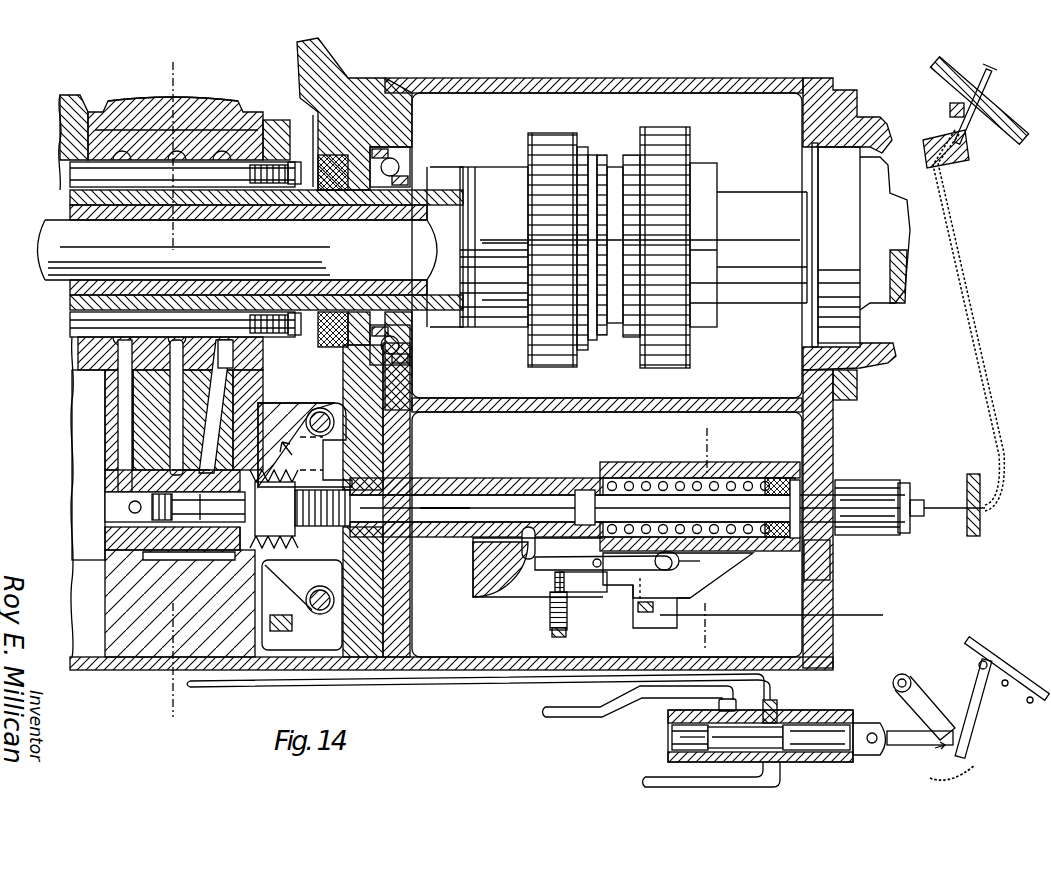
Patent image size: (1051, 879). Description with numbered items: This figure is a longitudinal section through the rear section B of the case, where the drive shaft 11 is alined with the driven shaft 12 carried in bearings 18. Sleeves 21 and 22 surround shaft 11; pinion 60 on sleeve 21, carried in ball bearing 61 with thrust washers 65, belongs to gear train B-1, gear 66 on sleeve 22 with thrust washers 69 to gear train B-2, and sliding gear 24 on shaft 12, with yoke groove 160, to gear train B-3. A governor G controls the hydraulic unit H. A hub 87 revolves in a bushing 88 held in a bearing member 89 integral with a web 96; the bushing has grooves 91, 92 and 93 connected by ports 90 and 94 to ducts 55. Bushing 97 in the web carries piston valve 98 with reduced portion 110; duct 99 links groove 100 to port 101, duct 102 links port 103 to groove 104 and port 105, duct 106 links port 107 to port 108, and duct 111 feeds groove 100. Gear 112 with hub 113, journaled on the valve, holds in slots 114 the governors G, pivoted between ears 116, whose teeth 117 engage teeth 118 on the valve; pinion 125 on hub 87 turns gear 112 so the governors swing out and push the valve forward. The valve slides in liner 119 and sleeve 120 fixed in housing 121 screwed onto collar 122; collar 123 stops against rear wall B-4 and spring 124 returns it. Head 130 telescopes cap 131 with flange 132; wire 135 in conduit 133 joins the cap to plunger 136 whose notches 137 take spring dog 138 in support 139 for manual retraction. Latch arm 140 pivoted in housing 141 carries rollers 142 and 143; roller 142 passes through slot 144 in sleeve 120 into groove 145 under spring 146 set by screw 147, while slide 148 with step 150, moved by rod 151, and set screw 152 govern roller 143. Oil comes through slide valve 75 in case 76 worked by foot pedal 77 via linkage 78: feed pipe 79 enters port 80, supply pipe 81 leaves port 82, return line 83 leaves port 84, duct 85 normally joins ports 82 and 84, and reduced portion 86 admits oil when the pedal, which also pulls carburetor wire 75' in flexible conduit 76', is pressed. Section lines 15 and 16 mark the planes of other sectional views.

The housing B is at (818, 92).
The housing bearing section B-1 is at (448, 174).
The gear B-2 is at (566, 134).
The gear B-3 is at (698, 137).
The housing wall B-4 is at (830, 563).
The shaft 11 is at (50, 280).
The shaft 12 is at (776, 300).
The section line 15 is at (158, 76).
The section line 16 is at (696, 450).
The hub 18 is at (840, 244).
The sleeve 21 is at (70, 196).
The sleeve 22 is at (70, 213).
The hub 24 is at (680, 337).
The plate 55 is at (186, 214).
The hub 60 is at (458, 330).
The bearing 61 is at (410, 160).
The spline 65 is at (528, 305).
The disc 66 is at (560, 362).
The spline 69 is at (530, 249).
The cylinder 75 is at (760, 720).
The lever arm 75' is at (980, 709).
The cylinder end 76 is at (665, 729).
The quadrant 76' is at (978, 776).
The pedal 77 is at (1015, 666).
The lever 78 is at (968, 702).
The pipe 79 is at (785, 782).
The piston 80 is at (780, 742).
The rod 81 is at (450, 692).
The fitting 82 is at (778, 708).
The pipe 83 is at (545, 719).
The piston head 84 is at (706, 736).
The fitting 85 is at (737, 700).
The clevis 86 is at (855, 728).
The flange 87 is at (232, 112).
The cap 88 is at (146, 112).
The cap dome 89 is at (219, 98).
The axis line 90 is at (205, 156).
The ball 91 is at (233, 145).
The ball 92 is at (168, 145).
The ball 93 is at (110, 237).
The ball 94 is at (184, 336).
The block 96 is at (105, 580).
The pin 97 is at (50, 531).
The housing 98 is at (446, 495).
The pin 99 is at (218, 380).
The slot 100 is at (221, 556).
The pin 101 is at (226, 361).
The block 102 is at (172, 440).
The pin 103 is at (128, 362).
The pin end 104 is at (172, 459).
The shaft 105 is at (129, 507).
The wall 106 is at (105, 430).
The plate 107 is at (90, 352).
The plate 108 is at (105, 479).
The block 110 is at (250, 420).
The slot 111 is at (148, 562).
The wall 112 is at (292, 401).
The wall 113 is at (341, 547).
The bracket 114 is at (262, 602).
The block 116 is at (293, 626).
The gear 117 is at (286, 540).
The shaft 118 is at (355, 508).
The wall 119 is at (410, 556).
The housing 120 is at (536, 478).
The plate 121 is at (636, 468).
The nut 122 is at (790, 471).
The collar 123 is at (792, 511).
The plate 124 is at (678, 460).
The bolt 125 is at (287, 120).
The cylinder 130 is at (905, 483).
The cap 131 is at (870, 480).
The shaft 132 is at (839, 495).
The chain 133 is at (975, 346).
The bracket 135 is at (965, 252).
The block 136 is at (951, 111).
The bracket 137 is at (966, 142).
The pin 138 is at (986, 100).
The bracket 139 is at (958, 73).
The quadrant 140 is at (512, 600).
The lever 141 is at (598, 598).
The pin 142 is at (575, 497).
The link 143 is at (682, 573).
The shaft 144 is at (520, 497).
The spring 145 is at (598, 511).
The spring 146 is at (565, 579).
The spring 147 is at (553, 640).
The arm 148 is at (725, 576).
The link 150 is at (690, 580).
The rod 151 is at (860, 615).
The nut 152 is at (645, 618).
The disc 160 is at (622, 360).
The cam G is at (408, 406).
The housing part H is at (72, 413).